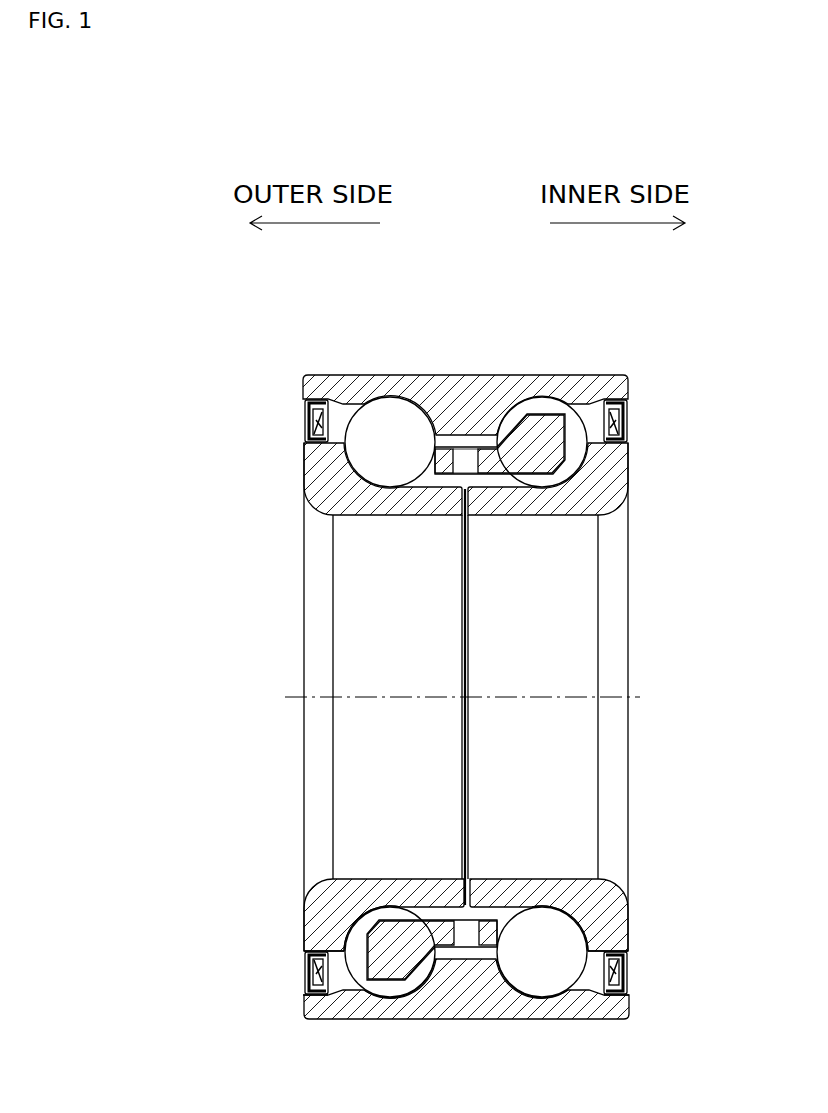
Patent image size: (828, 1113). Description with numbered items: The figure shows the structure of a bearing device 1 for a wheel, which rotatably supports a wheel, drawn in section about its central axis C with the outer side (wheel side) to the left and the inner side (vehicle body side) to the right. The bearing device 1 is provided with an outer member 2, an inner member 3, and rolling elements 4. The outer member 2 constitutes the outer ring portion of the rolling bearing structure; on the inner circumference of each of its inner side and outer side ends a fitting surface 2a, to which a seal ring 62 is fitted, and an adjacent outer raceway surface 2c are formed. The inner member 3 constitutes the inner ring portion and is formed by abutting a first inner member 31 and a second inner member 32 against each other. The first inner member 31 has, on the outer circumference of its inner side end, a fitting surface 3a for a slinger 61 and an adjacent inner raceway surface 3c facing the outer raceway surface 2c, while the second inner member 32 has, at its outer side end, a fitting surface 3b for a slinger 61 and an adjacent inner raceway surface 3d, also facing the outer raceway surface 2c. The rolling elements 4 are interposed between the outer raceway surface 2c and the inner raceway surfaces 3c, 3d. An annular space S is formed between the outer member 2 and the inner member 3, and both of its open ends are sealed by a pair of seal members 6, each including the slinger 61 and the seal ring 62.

The bearing device for a wheel 1 is at (465, 665).
The outer member 2 is at (490, 375).
The fitting surface 2a is at (333, 996).
The outer raceway surface 2c is at (390, 1000).
The inner member 3 is at (466, 697).
The first inner member 31 is at (508, 878).
The second inner member 32 is at (400, 878).
The fitting surface 3a is at (600, 944).
The fitting surface 3b is at (332, 948).
The inner raceway surface 3c is at (543, 905).
The inner raceway surface 3d is at (382, 906).
The rolling elements 4 is at (390, 490).
The seal member 6 is at (465, 680).
The slinger 61 is at (303, 418).
The seal ring 62 is at (310, 394).
The annular space S is at (464, 436).
The central axis C is at (476, 698).